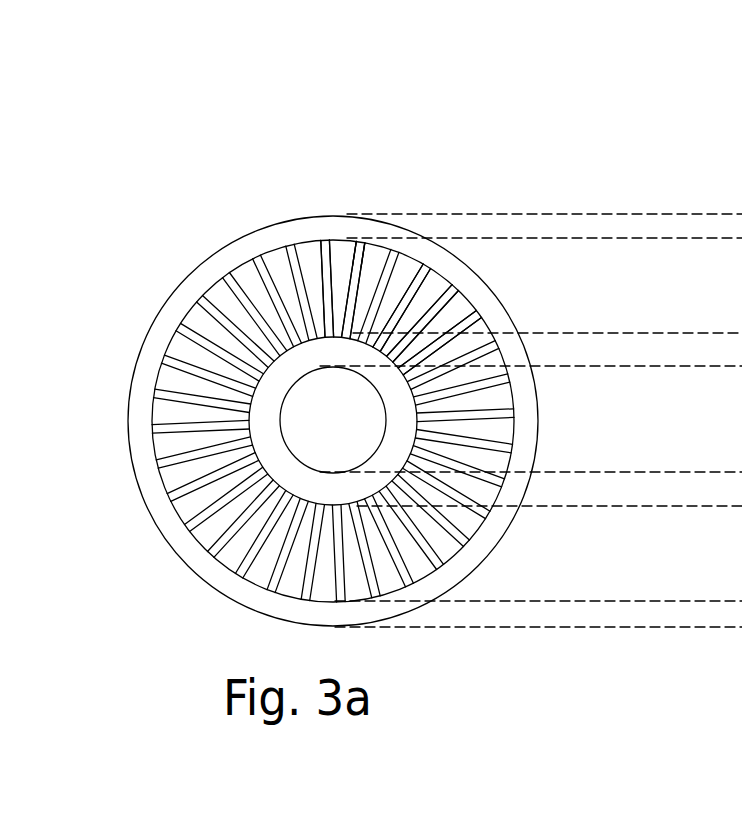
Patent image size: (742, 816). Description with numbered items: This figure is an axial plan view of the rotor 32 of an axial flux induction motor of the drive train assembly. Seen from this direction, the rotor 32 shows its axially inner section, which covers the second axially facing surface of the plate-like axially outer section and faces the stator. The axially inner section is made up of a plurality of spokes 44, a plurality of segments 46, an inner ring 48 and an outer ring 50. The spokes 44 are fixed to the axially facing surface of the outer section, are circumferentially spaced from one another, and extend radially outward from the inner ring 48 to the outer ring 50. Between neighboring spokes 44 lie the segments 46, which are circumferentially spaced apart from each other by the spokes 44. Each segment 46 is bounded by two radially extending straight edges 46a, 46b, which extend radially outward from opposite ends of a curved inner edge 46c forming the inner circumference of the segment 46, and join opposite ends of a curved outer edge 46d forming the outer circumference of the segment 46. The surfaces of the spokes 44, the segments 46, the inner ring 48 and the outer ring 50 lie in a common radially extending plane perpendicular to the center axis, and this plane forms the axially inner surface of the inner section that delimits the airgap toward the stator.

The rotor 32 is at (206, 240).
The spokes 44 is at (468, 326).
The segments 46 is at (490, 425).
The radially extending straight edge 46a is at (323, 287).
The radially extending straight edge 46b is at (347, 283).
The curved inner edge 46c is at (337, 335).
The curved outer edge 46d is at (343, 240).
The inner ring 48 is at (267, 407).
The outer ring 50 is at (345, 227).